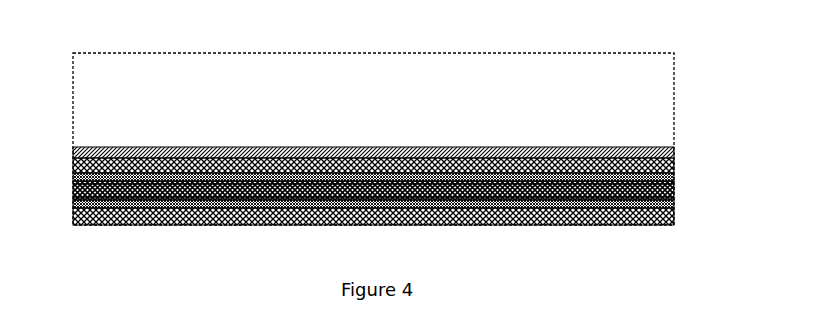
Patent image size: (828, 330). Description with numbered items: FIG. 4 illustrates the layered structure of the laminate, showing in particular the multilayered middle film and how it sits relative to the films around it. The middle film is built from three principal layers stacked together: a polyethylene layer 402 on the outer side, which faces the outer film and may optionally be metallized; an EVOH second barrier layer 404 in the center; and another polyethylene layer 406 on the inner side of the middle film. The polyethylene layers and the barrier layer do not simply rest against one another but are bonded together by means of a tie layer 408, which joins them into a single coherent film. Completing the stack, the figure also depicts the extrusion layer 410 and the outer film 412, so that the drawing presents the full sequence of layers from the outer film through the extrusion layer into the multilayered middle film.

The polyethylene layer 402 is at (670, 165).
The EVOH second barrier layer 404 is at (670, 187).
The polyethylene layer 406 is at (670, 212).
The tie layer 408 is at (76, 201).
The extrusion layer 410 is at (77, 151).
The outer film 412 is at (663, 99).